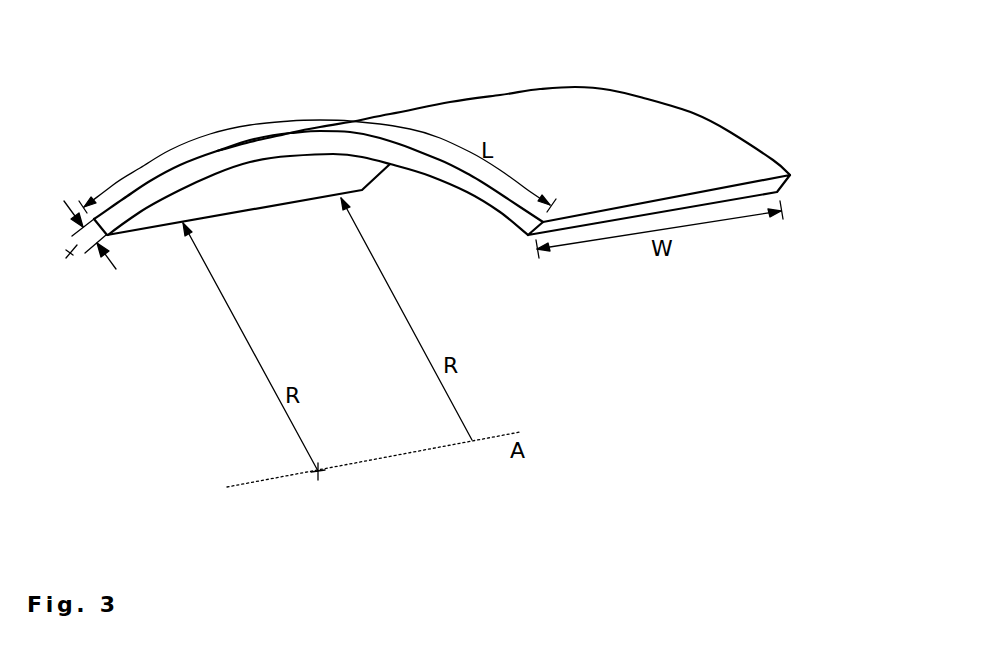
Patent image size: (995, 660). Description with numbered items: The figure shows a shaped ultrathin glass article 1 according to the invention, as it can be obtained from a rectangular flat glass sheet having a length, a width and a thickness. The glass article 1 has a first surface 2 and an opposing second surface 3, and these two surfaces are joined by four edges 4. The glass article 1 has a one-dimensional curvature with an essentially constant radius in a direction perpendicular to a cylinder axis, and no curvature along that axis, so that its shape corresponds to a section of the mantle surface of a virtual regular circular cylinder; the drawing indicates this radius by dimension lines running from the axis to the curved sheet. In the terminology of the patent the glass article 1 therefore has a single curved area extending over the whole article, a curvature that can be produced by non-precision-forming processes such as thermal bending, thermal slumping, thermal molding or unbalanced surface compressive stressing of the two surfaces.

The shaped ultrathin glass article 1 is at (307, 105).
The first surface 2 is at (688, 143).
The second surface 3 is at (200, 213).
The edges 4 is at (220, 157).